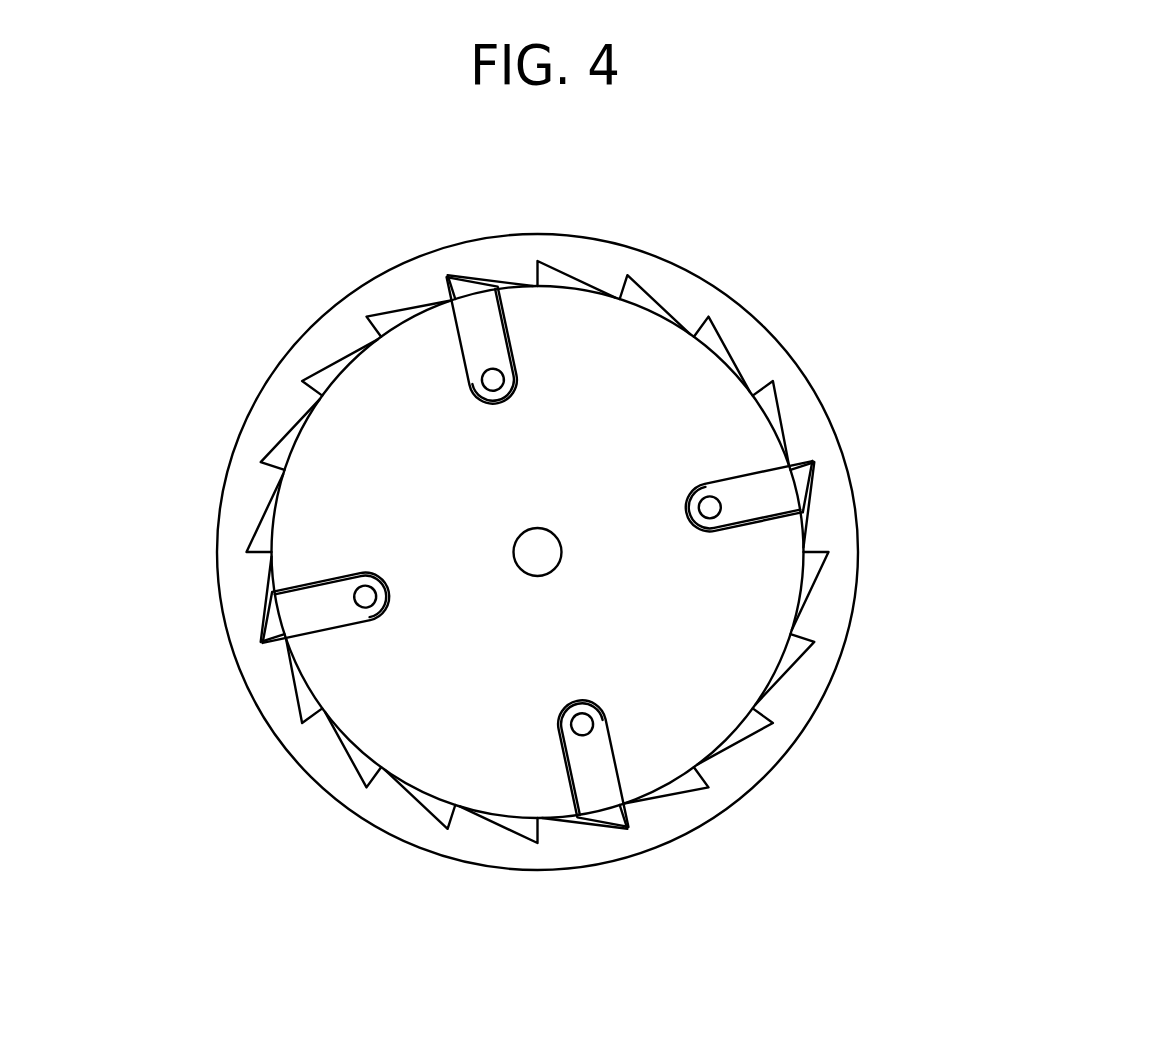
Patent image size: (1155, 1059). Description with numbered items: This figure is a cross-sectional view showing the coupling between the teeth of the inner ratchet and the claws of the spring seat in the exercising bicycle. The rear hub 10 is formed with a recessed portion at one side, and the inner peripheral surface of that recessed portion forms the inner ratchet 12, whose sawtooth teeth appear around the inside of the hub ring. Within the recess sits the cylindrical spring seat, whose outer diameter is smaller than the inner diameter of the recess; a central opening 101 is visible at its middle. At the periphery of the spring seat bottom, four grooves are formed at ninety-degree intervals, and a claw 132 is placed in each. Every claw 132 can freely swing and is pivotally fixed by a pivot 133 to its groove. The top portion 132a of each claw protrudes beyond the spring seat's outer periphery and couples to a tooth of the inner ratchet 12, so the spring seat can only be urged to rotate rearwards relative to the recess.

The rear hub 10 is at (687, 277).
The inner ratchet 12 is at (782, 422).
The center hole 101 is at (558, 563).
The claw 132 is at (733, 530).
The top portion of the claw 132a is at (810, 486).
The pivot 133 is at (710, 507).